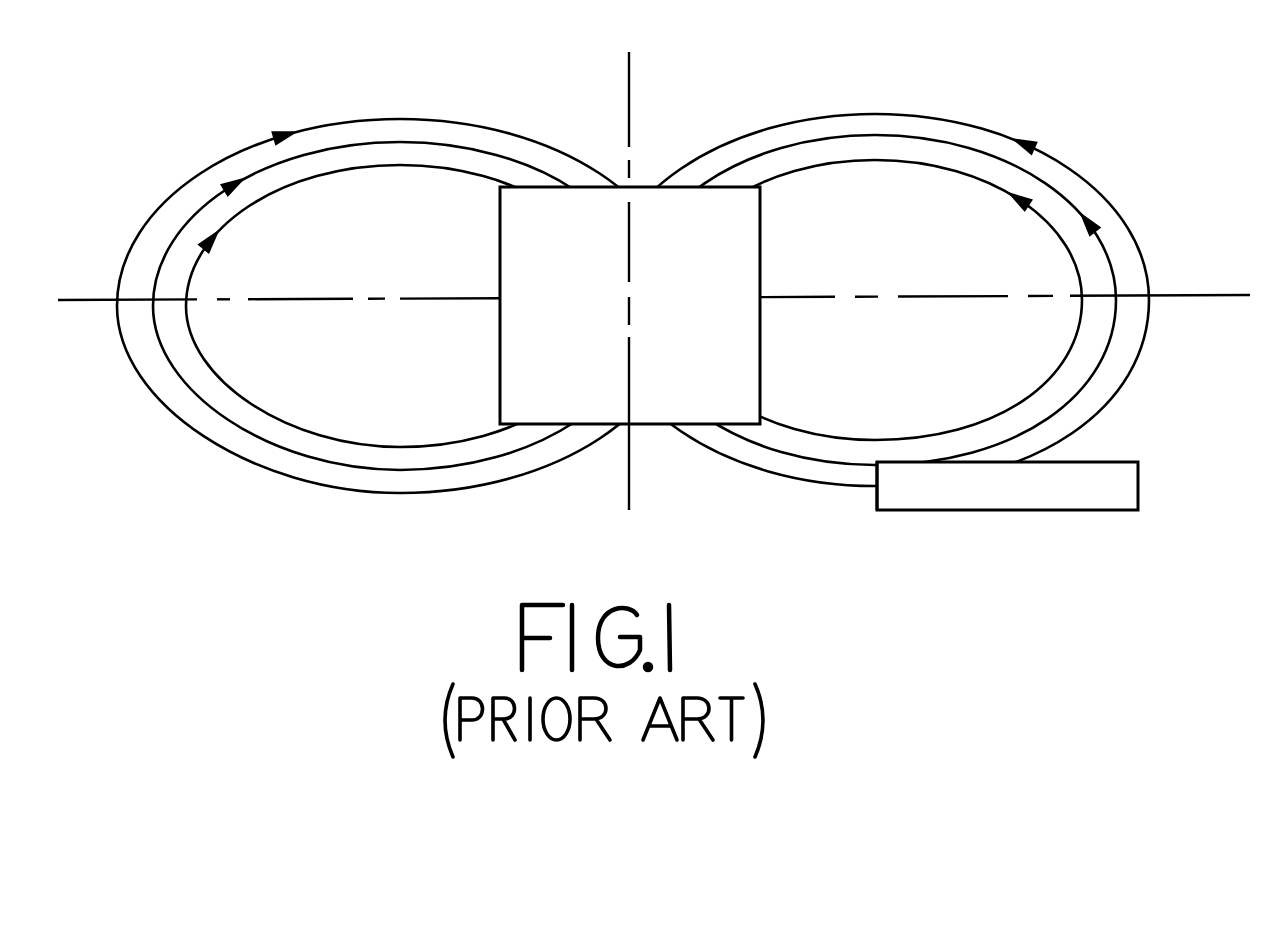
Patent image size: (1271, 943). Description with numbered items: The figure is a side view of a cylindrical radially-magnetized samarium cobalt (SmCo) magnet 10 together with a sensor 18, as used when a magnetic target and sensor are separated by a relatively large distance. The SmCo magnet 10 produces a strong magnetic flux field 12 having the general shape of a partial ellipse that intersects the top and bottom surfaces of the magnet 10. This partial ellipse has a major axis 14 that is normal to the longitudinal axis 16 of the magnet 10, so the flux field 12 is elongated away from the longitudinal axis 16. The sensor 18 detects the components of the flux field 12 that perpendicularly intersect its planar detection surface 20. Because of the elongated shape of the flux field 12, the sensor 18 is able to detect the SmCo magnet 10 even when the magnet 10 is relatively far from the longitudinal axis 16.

The SmCo magnet 10 is at (645, 385).
The magnetic flux field 12 is at (140, 430).
The major axis 14 is at (96, 299).
The longitudinal axis 16 is at (629, 90).
The sensor 18 is at (1023, 510).
The planar detection surface 20 is at (877, 503).